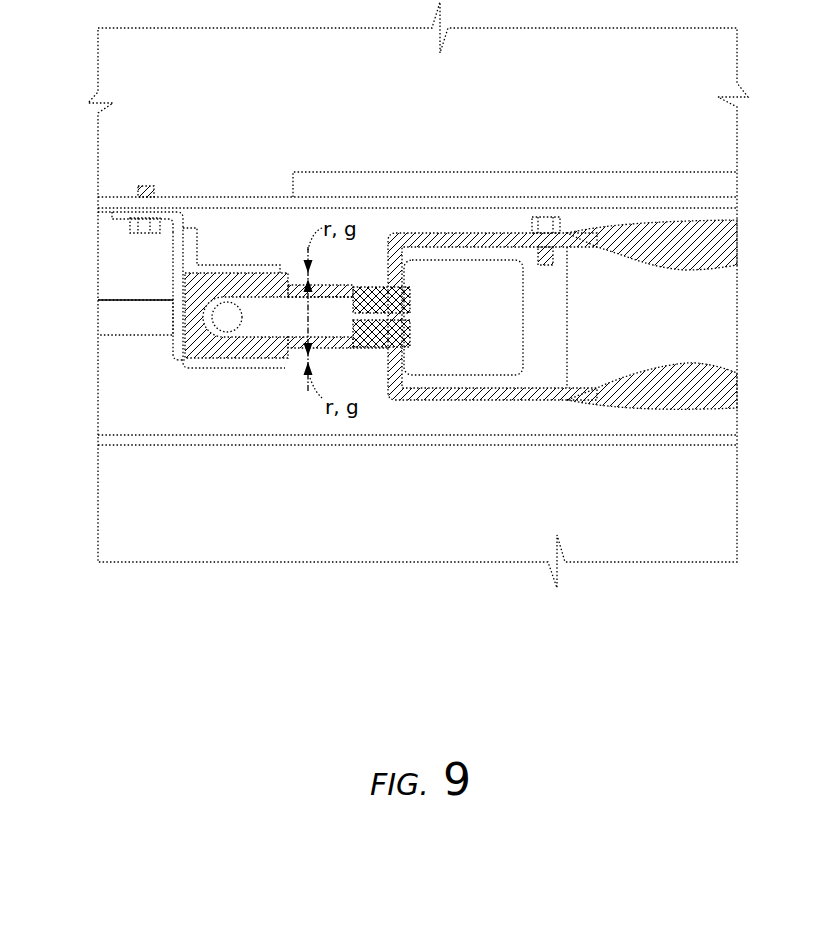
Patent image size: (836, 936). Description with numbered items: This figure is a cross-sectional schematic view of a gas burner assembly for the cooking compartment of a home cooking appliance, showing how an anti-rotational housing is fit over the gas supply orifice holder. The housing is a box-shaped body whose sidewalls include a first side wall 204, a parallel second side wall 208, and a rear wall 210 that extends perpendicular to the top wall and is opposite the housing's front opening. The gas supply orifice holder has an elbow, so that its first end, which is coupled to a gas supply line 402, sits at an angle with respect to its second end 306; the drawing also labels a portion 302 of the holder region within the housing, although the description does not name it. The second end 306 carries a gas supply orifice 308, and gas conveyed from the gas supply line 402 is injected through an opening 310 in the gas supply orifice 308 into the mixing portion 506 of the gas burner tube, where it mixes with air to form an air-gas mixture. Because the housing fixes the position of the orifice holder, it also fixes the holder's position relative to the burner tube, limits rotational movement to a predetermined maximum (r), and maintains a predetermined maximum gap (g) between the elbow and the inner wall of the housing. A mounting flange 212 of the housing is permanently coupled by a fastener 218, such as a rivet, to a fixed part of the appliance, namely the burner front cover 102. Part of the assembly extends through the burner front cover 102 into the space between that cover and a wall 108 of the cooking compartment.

The burner front cover 102 is at (233, 196).
The wall of the cooking compartment 108 is at (390, 446).
The first side wall 204 is at (230, 264).
The second side wall 208 is at (190, 370).
The rear wall 210 is at (173, 340).
The mounting flange 212 is at (112, 212).
The fastener 218 is at (150, 189).
The arm 302 is at (258, 372).
The second end 306 is at (330, 287).
The gas supply orifice 308 is at (412, 338).
The opening 310 is at (413, 318).
The gas supply line 402 is at (98, 310).
The mixing portion 506 is at (468, 400).